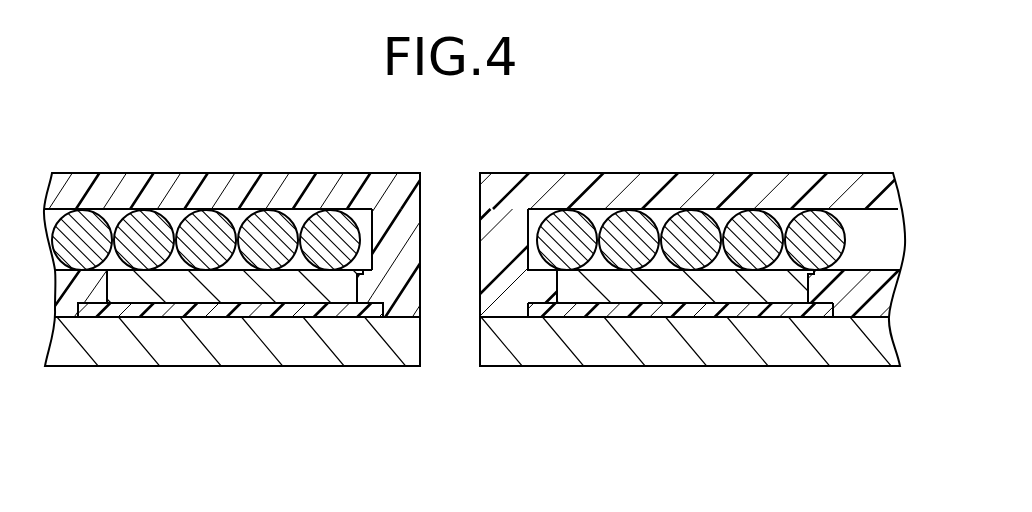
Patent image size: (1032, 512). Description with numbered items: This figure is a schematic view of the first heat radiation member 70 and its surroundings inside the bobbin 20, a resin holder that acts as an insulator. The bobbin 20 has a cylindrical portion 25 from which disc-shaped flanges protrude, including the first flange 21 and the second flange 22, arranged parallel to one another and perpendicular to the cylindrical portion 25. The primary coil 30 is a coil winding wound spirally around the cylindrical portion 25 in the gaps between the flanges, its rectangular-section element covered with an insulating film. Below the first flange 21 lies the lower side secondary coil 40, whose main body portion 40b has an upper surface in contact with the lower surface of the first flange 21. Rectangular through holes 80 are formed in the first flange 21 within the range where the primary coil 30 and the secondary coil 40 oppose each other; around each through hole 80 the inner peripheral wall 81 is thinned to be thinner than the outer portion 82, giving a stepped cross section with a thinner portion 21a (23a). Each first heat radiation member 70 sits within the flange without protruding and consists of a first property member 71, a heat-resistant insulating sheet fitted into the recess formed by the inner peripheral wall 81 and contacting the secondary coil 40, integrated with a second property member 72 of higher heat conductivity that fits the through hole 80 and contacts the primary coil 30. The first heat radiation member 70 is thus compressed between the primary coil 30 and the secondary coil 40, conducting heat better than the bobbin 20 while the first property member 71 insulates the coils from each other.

The bobbin 20 is at (800, 157).
The first flange 21 is at (524, 263).
The thinner portion 21a is at (246, 339).
The inner surface 23a is at (372, 292).
The second flange 22 is at (728, 183).
The cylindrical portion 25 is at (421, 226).
The primary coil 30 is at (626, 223).
The lower side secondary coil 40 is at (813, 367).
The main body portion 40b is at (675, 350).
The first heat radiation member 70 is at (281, 317).
The first property member 71 is at (593, 312).
The second property member 72 is at (720, 284).
The through hole 80 is at (108, 288).
The inner peripheral wall 81 is at (830, 289).
The outer portion 82 is at (878, 305).